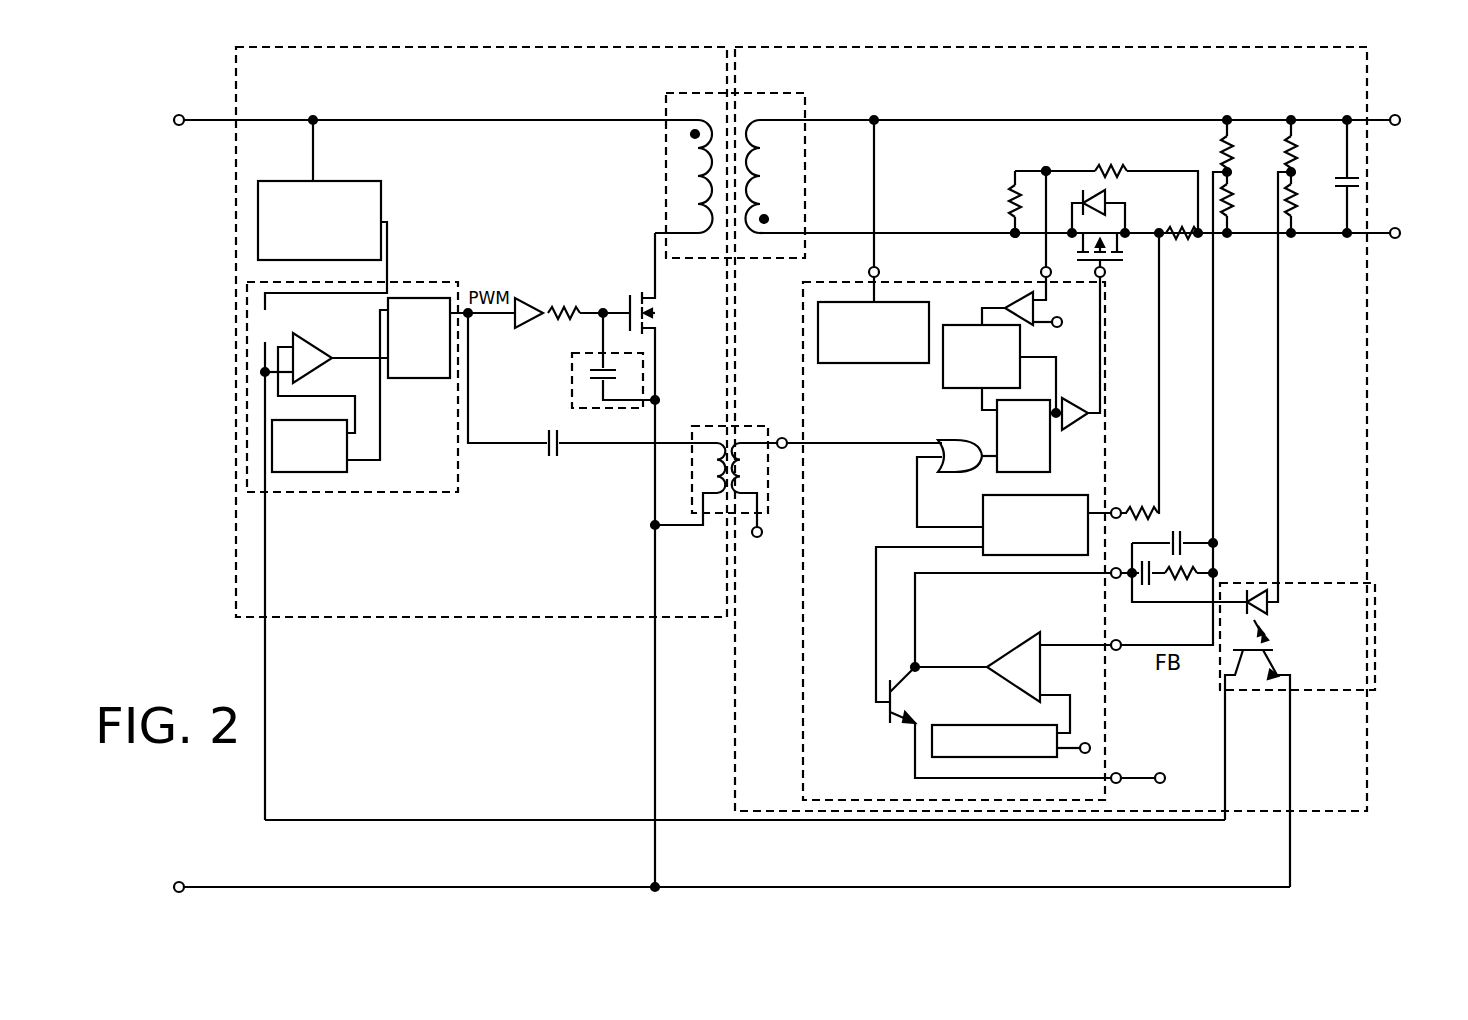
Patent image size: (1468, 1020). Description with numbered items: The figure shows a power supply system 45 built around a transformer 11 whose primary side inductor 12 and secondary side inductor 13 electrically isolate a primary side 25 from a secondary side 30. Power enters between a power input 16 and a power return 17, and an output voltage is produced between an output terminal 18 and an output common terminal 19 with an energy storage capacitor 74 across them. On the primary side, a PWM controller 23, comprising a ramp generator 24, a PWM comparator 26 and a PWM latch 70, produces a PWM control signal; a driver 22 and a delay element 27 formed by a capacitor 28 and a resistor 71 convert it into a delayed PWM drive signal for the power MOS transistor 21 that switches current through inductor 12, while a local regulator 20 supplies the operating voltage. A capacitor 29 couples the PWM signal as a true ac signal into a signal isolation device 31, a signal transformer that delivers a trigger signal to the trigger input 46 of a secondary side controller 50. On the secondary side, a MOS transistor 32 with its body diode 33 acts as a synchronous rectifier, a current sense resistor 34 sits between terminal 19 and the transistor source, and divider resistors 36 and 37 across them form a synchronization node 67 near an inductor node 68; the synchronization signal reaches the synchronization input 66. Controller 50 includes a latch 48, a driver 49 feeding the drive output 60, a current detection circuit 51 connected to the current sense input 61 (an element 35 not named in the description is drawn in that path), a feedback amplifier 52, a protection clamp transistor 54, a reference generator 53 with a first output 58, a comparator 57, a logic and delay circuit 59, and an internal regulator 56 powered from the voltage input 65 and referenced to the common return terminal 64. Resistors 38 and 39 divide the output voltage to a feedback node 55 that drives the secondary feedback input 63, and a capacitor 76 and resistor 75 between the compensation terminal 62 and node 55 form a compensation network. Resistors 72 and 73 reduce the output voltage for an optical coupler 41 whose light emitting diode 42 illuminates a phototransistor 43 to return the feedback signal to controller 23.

The transformer 11 is at (730, 158).
The primary side inductor 12 is at (666, 176).
The secondary side inductor 13 is at (805, 197).
The power input 16 is at (178, 113).
The power return 17 is at (178, 880).
The output terminal 18 is at (1400, 114).
The output common terminal 19 is at (1400, 229).
The local regulator 20 is at (360, 181).
The power MOS transistor 21 is at (640, 290).
The driver 22 is at (530, 296).
The PWM controller 23 is at (340, 493).
The ramp generator 24 is at (340, 472).
The primary side 25 is at (236, 540).
The PWM comparator 26 is at (320, 346).
The delay element 27 is at (572, 388).
The capacitor 28 is at (598, 362).
The capacitor 29 is at (559, 450).
The secondary side 30 is at (733, 655).
The signal isolation device 31 is at (712, 426).
The MOS transistor 32 is at (1124, 252).
The diode 33 is at (1108, 195).
The current sense resistor 34 is at (1180, 242).
The resistor 35 is at (1140, 506).
The divider resistor 36 is at (1118, 170).
The divider resistor 37 is at (1010, 210).
The resistor 38 is at (1235, 148).
The resistor 39 is at (1235, 200).
The optical coupler 41 is at (1376, 605).
The light emitting diode 42 is at (932, 457).
The phototransistor 43 is at (1278, 655).
The power supply system 45 is at (840, 925).
The trigger input 46 is at (782, 436).
The latch 48 is at (997, 434).
The driver 49 is at (1076, 398).
The secondary side controller 50 is at (803, 665).
The current detection circuit 51 is at (983, 520).
The feedback amplifier 52 is at (1018, 645).
The reference generator 53 is at (978, 724).
The protection clamp transistor 54 is at (887, 712).
The feedback node 55 is at (1216, 540).
The internal regulator 56 is at (880, 363).
The comparator 57 is at (1006, 300).
The first output 58 is at (1062, 318).
The logic and delay circuit 59 is at (974, 325).
The drive output 60 is at (1106, 276).
The current sense input 61 is at (1114, 507).
The compensation terminal 62 is at (1111, 578).
The secondary feedback input 63 is at (1116, 652).
The common return terminal 64 is at (1118, 772).
The voltage input 65 is at (880, 272).
The synchronization input 66 is at (1040, 272).
The synchronization node 67 is at (1049, 167).
The inductor node 68 is at (1011, 230).
The PWM latch 70 is at (408, 380).
The resistor 71 is at (563, 306).
The resistor 72 is at (1298, 140).
The resistor 73 is at (1298, 212).
The energy storage capacitor 74 is at (1342, 178).
The resistor 75 is at (1186, 582).
The capacitor 76 is at (1140, 588).